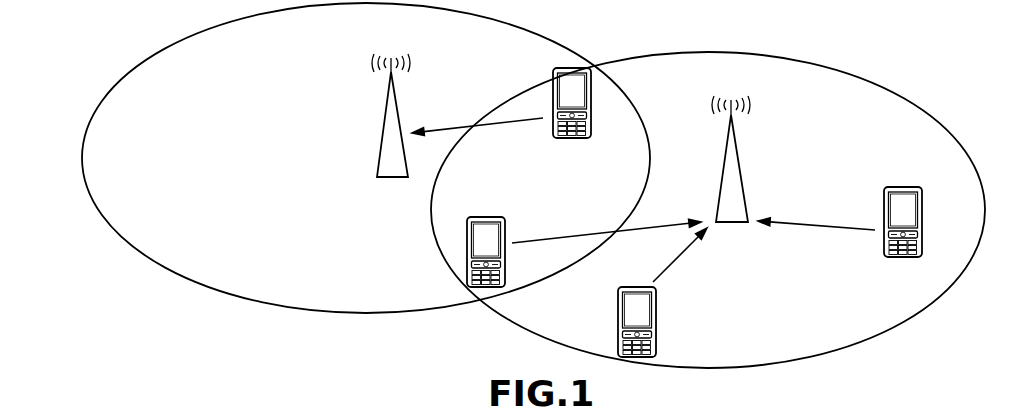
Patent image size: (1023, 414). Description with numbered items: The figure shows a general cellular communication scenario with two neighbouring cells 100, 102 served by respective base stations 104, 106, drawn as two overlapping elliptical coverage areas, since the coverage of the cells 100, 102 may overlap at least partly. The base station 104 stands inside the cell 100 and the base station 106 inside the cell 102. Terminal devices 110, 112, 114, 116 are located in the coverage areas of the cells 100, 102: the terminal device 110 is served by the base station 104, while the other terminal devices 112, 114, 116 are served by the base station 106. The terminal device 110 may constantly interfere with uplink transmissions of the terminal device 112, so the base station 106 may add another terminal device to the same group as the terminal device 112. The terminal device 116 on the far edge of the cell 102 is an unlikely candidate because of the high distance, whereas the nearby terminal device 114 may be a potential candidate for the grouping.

The cell 100 is at (172, 108).
The cell 102 is at (877, 327).
The base station 104 is at (385, 120).
The base station 106 is at (741, 165).
The terminal device 110 is at (573, 138).
The terminal device 112 is at (506, 222).
The terminal device 114 is at (659, 302).
The terminal device 116 is at (887, 190).